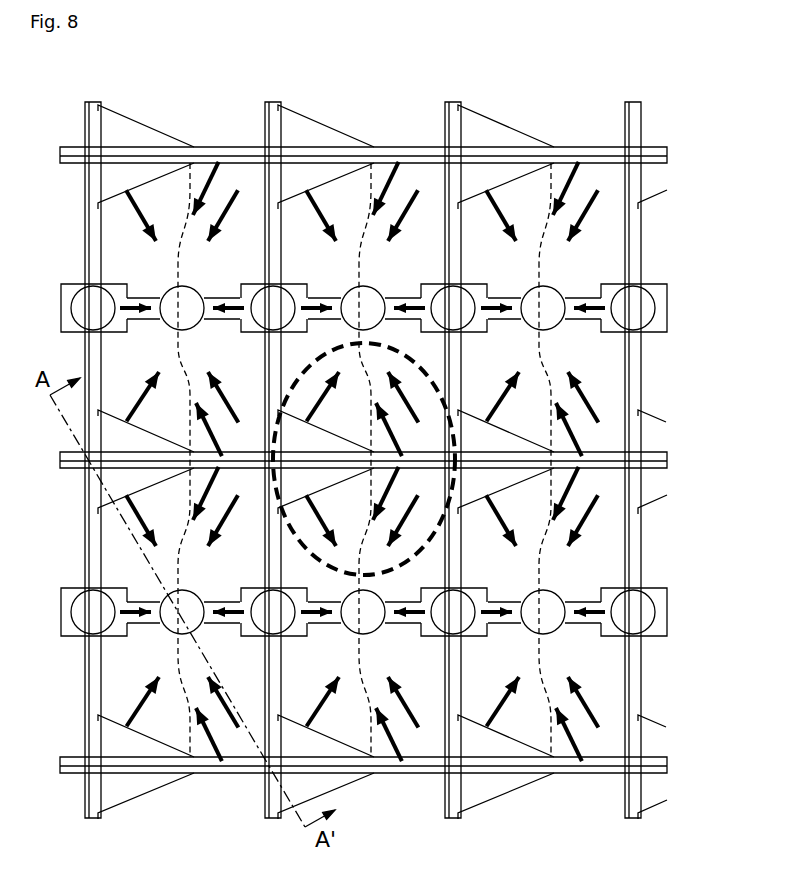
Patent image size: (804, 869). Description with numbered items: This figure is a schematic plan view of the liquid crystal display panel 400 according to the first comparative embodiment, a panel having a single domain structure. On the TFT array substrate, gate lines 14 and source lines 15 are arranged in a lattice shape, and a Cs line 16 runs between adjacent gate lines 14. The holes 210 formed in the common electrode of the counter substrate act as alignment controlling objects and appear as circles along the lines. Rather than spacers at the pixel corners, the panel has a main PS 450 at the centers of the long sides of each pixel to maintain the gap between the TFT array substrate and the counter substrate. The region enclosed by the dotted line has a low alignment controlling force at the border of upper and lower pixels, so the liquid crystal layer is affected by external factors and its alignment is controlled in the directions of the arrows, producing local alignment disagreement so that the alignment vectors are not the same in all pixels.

The liquid crystal display panel 400 is at (722, 74).
The hole 210 is at (563, 293).
The Cs line 16 is at (658, 461).
The main PS 450 is at (643, 603).
The gate line 14 is at (660, 612).
The source line 15 is at (635, 749).